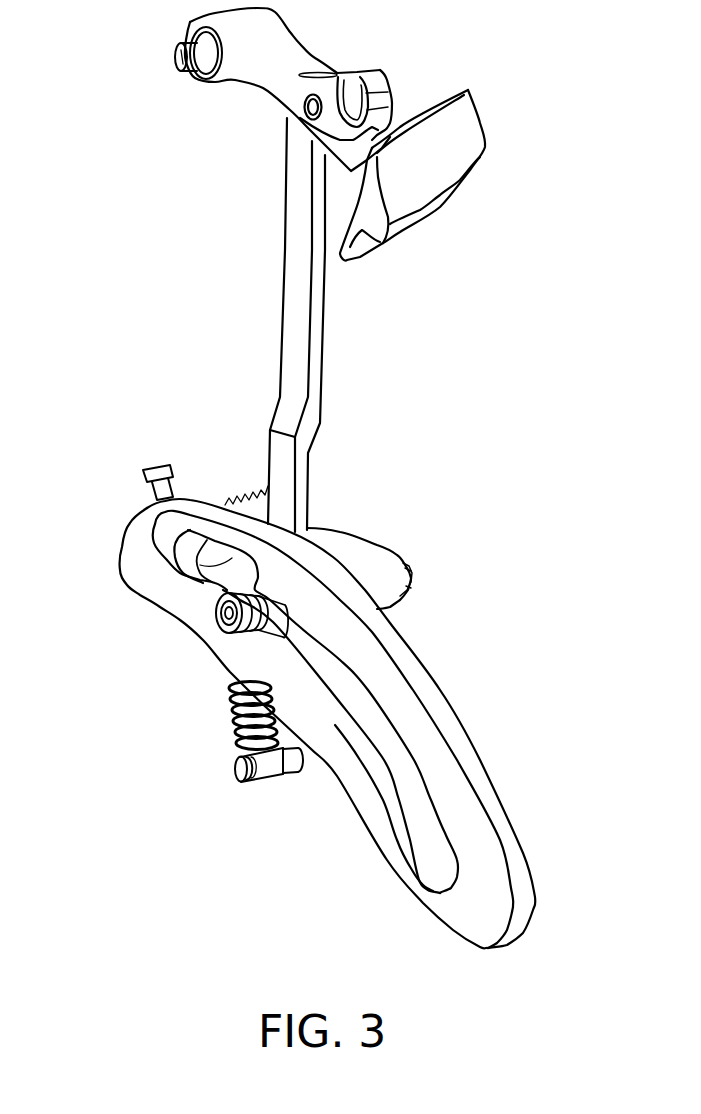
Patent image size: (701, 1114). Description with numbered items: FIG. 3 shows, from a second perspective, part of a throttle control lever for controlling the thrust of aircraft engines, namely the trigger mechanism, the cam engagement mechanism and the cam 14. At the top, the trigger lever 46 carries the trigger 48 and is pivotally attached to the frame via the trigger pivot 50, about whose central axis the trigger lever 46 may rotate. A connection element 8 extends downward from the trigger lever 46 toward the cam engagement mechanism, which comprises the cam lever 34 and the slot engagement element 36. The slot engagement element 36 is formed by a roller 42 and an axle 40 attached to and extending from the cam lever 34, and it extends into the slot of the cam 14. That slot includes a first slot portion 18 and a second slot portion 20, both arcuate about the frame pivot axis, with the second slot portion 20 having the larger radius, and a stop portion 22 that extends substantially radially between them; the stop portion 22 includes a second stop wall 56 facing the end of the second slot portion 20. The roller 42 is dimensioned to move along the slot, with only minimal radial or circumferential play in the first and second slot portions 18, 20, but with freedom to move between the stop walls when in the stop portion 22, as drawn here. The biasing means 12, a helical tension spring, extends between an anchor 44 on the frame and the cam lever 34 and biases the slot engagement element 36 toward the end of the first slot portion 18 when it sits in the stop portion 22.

The connection element 8 is at (300, 367).
The biasing means 12 is at (237, 716).
The cam 14 is at (470, 807).
The first slot portion 18 is at (418, 790).
The second slot portion 20 is at (207, 555).
The stop portion 22 is at (212, 583).
The cam lever 34 is at (345, 548).
The slot engagement element 36 is at (218, 638).
The axle 40 is at (217, 617).
The roller 42 is at (217, 613).
The anchor 44 is at (240, 767).
The trigger lever 46 is at (260, 97).
The trigger 48 is at (457, 160).
The trigger pivot 50 is at (175, 67).
The second stop wall 56 is at (260, 580).